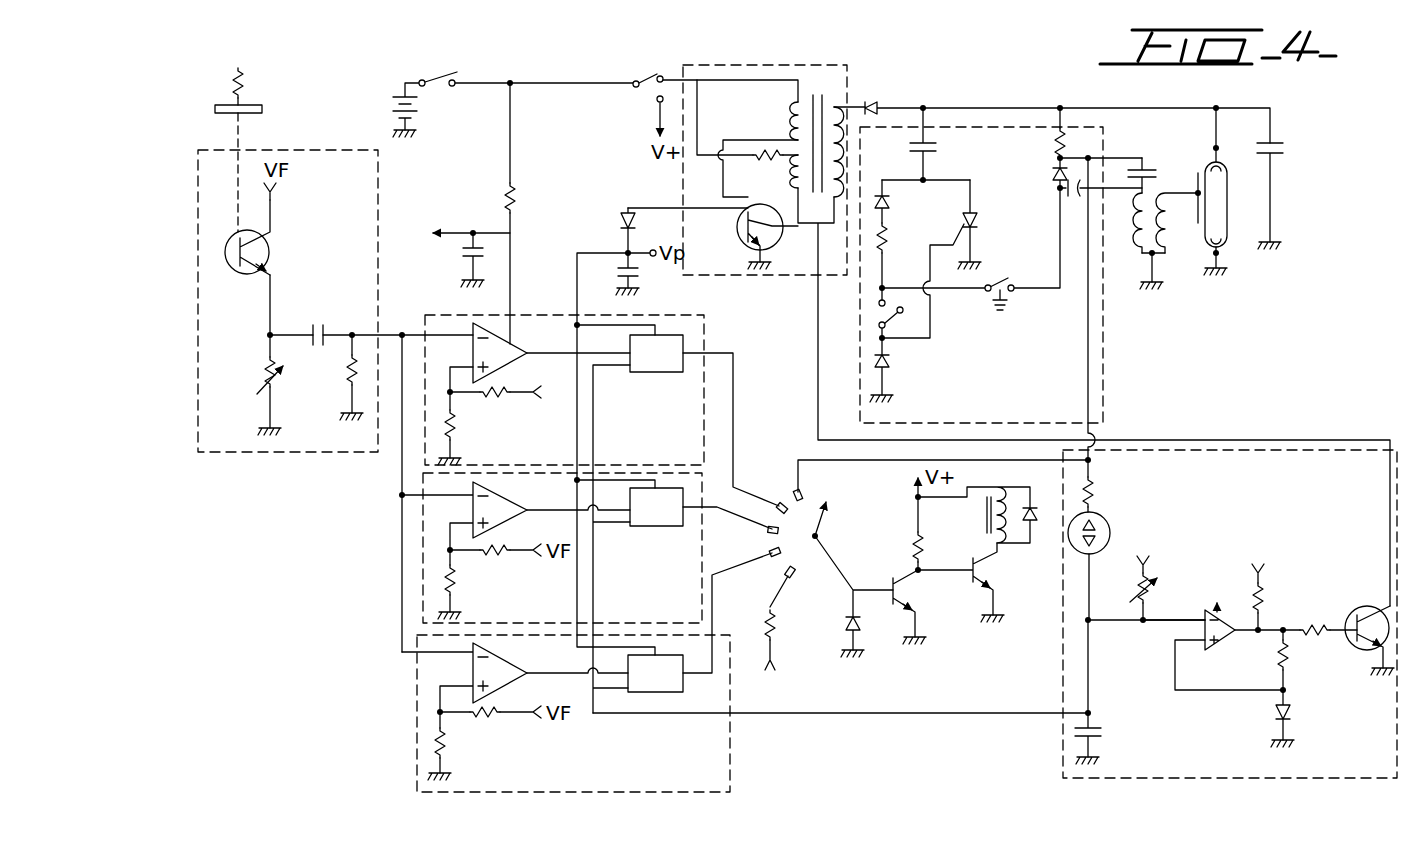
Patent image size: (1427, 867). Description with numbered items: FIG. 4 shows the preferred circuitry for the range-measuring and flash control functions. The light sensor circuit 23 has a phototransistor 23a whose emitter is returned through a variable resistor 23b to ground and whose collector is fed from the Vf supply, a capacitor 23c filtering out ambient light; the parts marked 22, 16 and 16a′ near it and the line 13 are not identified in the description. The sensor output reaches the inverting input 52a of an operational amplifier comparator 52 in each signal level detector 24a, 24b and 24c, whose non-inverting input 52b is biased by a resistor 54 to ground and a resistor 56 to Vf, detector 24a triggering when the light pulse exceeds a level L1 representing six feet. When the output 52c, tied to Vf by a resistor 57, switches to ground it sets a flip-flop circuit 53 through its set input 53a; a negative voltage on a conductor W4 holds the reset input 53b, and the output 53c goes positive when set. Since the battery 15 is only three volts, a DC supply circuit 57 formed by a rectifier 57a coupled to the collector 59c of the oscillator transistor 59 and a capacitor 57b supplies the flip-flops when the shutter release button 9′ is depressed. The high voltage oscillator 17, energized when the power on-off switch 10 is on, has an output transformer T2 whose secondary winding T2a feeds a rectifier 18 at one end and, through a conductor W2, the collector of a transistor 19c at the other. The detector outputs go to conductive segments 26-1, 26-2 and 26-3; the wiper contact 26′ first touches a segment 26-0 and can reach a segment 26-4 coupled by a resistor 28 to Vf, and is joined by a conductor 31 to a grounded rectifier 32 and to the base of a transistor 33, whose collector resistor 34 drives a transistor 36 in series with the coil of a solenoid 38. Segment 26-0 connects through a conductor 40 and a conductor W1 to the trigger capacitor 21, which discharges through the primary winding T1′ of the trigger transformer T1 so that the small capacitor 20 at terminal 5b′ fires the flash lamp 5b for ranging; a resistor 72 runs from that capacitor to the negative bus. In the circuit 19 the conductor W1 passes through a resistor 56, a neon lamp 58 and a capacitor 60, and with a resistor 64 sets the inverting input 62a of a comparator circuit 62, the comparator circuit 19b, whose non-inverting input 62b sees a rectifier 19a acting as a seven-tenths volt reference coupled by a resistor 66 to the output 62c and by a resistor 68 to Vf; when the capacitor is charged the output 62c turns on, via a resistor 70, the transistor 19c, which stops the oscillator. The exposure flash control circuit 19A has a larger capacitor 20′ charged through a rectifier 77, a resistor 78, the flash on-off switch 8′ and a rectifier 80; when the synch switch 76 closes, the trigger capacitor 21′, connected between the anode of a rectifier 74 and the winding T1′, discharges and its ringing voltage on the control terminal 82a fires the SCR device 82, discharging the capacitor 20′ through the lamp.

The lamp L1 is at (245, 74).
The photocell 22 is at (262, 109).
The light sensing circuit 23 is at (378, 201).
The transistor 23a is at (270, 247).
The variable resistor 23b is at (261, 371).
The capacitor / resistor network 23c is at (332, 305).
The battery 15 is at (396, 100).
The power switch 10 is at (445, 74).
The switch 9′ is at (643, 74).
The voltage divider 16 is at (450, 248).
The capacitor 16a′ is at (482, 241).
The voltage source 57 is at (618, 225).
The diode 57a is at (635, 226).
The capacitor 57b is at (638, 281).
The comparator stage 24a is at (683, 318).
The comparator stage 24b is at (634, 459).
The comparator stage 24c is at (636, 610).
The comparator 52 is at (520, 372).
The inverting input 52a is at (473, 324).
The non-inverting input 52b is at (471, 367).
The comparator output 52c is at (532, 335).
The resistor 54 is at (455, 425).
The resistor 56 is at (500, 398).
The flip-flop 53 is at (665, 372).
The flip-flop input 53a is at (628, 348).
The flip-flop reset line 53b is at (632, 372).
The flip-flop output 53c is at (683, 345).
The oscillator / converter 17 is at (748, 64).
The transformer T2 is at (810, 130).
The transformer secondary winding T2a is at (832, 133).
The oscillator transistor 59 is at (776, 247).
The transistor base 59c is at (765, 193).
The rectifier diode 18 is at (880, 100).
The charging line 13 is at (1004, 108).
The trigger circuit 19A is at (1016, 124).
The capacitor 20′ is at (936, 148).
The diode 77 is at (889, 205).
The resistor 78 is at (887, 253).
The thyristor 82 is at (975, 213).
The thyristor gate 82a is at (954, 238).
The synch switch 76 is at (1020, 287).
The resistor 72 is at (1055, 145).
The diode 74 is at (1052, 172).
The wire W1 is at (1088, 367).
The capacitor 21′ is at (1066, 193).
The trigger capacitor 21 is at (1142, 164).
The trigger transformer primary T1′ is at (1139, 238).
The trigger transformer T1 is at (1145, 257).
The flash tube 5b is at (1228, 186).
The flash tube anode 5b′ is at (1218, 148).
The main storage capacitor 20 is at (1278, 146).
The mode switch 8′ is at (875, 310).
The diode 80 is at (889, 363).
The wire 40 is at (996, 460).
The switch contact 26-0 is at (803, 491).
The switch contact 26-1 is at (781, 505).
The switch contact 26-2 is at (767, 533).
The switch contact 26-3 is at (750, 570).
The switch contact 26-4 is at (798, 576).
The switch wiper 26′ is at (827, 501).
The wiper lead 31 is at (839, 565).
The diode 32 is at (845, 623).
The resistor 28 is at (774, 631).
The transistor 33 is at (890, 573).
The resistor 34 is at (913, 535).
The transistor 36 is at (970, 560).
The relay 38 is at (977, 515).
The control circuit W2 is at (1233, 450).
The control circuit 19 is at (1168, 450).
The current source 58 is at (1110, 532).
The capacitor 60 is at (1100, 739).
The wire W4 is at (850, 714).
The variable resistor 64 is at (1140, 593).
The comparator 62 is at (1224, 624).
The inverting input 62a is at (1203, 619).
The non-inverting input 62b is at (1203, 645).
The comparator output 62c is at (1232, 635).
The supply input 19b is at (1217, 566).
The resistor 68 is at (1264, 598).
The resistor 66 is at (1290, 656).
The diode 19a is at (1291, 715).
The resistor 70 is at (1313, 623).
The transistor 19c is at (1373, 606).